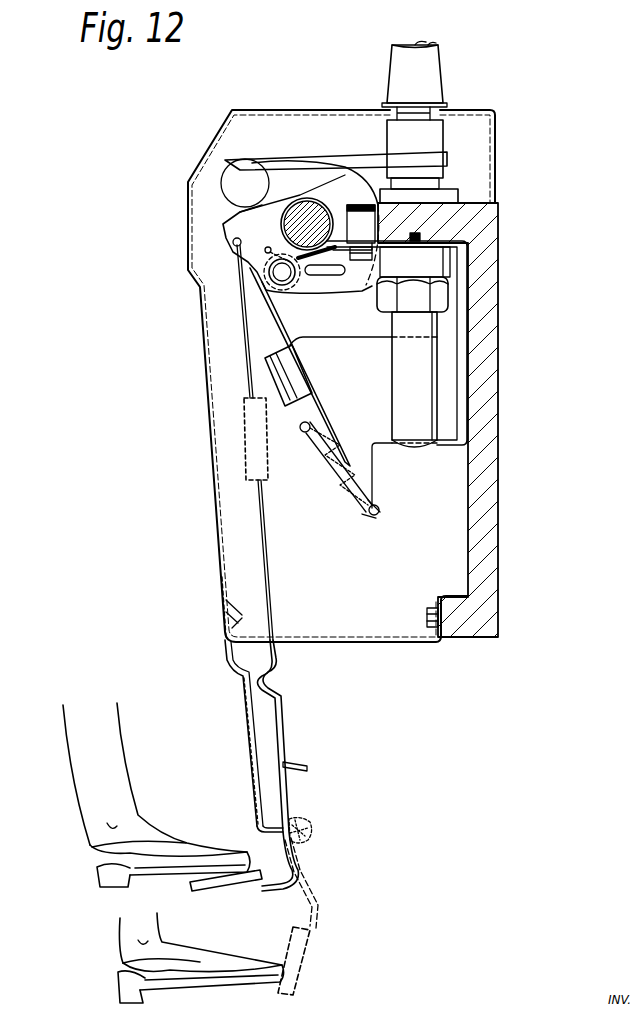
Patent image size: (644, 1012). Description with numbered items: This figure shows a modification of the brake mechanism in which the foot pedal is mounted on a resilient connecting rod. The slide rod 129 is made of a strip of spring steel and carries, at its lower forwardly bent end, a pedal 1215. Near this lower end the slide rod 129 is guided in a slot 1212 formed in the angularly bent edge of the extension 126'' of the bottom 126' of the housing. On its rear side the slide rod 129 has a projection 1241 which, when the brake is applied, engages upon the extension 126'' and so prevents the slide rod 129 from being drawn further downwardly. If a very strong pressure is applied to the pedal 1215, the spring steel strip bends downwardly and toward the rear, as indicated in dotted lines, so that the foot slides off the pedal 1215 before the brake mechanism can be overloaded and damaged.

The bottom of the housing 126' is at (341, 417).
The slide rod 129 is at (375, 741).
The extension of the bottom of the housing 126'' is at (207, 733).
The slot 1212 is at (260, 822).
The projection 1241 is at (300, 770).
The pedal 1215 is at (222, 900).